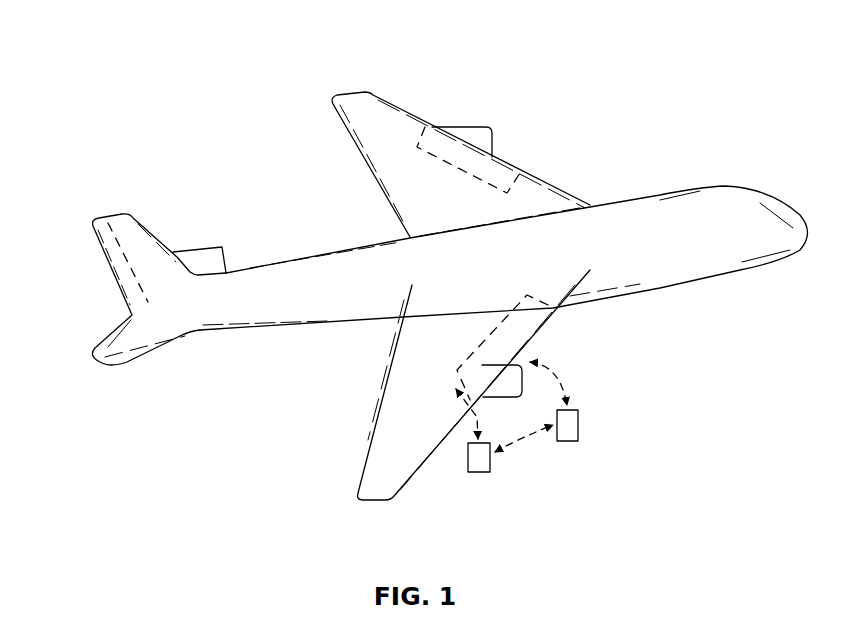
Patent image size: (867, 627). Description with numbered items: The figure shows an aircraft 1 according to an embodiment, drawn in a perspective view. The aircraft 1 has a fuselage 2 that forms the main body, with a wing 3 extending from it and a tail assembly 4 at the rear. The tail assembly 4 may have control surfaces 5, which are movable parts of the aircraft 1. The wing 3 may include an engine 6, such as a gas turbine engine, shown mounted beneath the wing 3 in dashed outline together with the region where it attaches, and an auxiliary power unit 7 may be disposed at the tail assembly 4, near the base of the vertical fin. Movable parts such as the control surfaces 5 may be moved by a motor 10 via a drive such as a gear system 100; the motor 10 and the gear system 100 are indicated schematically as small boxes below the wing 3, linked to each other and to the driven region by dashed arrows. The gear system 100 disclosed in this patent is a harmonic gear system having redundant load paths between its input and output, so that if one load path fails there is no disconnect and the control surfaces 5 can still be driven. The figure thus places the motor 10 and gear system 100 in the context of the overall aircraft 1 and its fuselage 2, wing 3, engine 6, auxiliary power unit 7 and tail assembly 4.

The aircraft 1 is at (425, 287).
The fuselage 2 is at (637, 217).
The wing 3 is at (358, 110).
The tail assembly 4 is at (92, 282).
The control surfaces 5 is at (500, 170).
The engine 6 is at (458, 127).
The auxiliary power unit 7 is at (203, 248).
The motor 10 is at (478, 472).
The gear system 100 is at (567, 441).